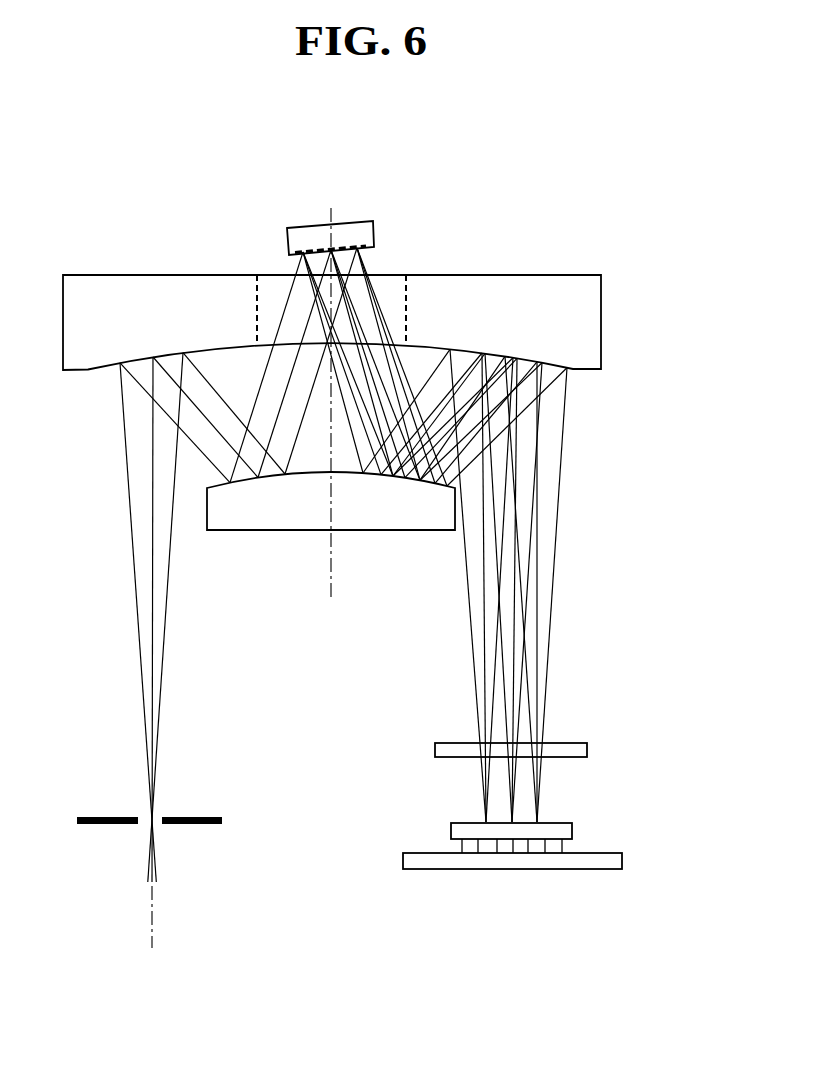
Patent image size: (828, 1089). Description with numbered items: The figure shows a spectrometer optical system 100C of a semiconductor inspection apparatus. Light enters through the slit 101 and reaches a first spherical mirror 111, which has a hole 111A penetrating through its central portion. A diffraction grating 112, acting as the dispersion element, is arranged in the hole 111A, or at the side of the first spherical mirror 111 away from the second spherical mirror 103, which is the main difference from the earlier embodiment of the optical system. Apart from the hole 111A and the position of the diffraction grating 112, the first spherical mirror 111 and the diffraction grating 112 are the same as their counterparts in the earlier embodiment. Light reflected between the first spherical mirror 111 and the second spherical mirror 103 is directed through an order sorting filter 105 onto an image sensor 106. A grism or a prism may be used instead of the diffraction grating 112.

The spectrometer optical system 100C is at (223, 164).
The slit 101 is at (205, 815).
The second spherical mirror 103 is at (418, 531).
The order sorting filter 105 is at (588, 750).
The image sensor 106 is at (612, 827).
The first spherical mirror 111 is at (146, 282).
The hole 111A is at (396, 282).
The diffraction grating 112 is at (304, 228).